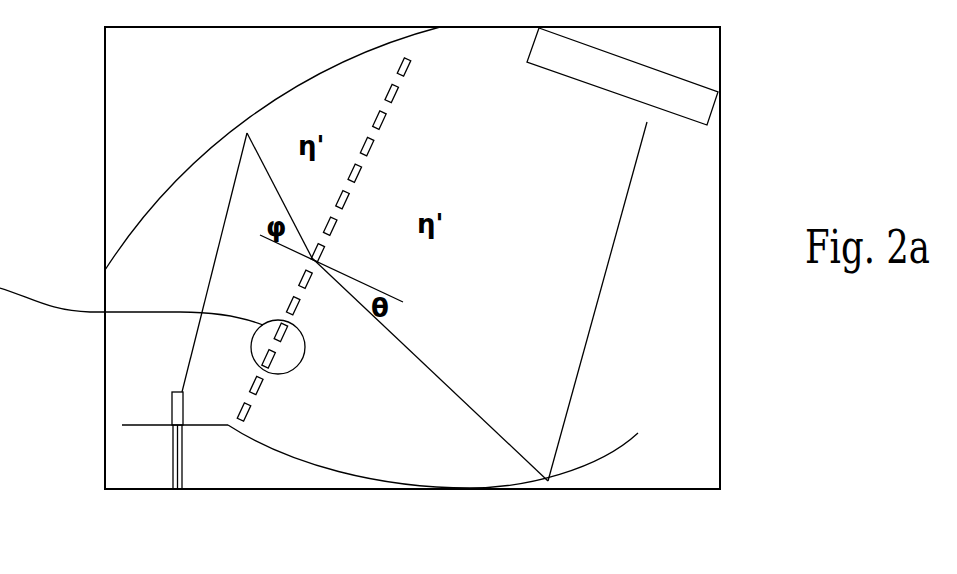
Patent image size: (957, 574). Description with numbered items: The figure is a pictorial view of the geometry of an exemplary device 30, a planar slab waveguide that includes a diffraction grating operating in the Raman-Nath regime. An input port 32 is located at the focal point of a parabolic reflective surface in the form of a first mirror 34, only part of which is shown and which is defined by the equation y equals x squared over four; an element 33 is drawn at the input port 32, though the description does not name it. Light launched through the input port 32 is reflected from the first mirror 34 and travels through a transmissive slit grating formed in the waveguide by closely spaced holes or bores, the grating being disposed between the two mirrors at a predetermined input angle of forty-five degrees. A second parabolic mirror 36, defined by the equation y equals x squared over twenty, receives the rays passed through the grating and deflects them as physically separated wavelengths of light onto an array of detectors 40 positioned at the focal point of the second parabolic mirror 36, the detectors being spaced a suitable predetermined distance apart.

The device 30 is at (103, 101).
The input port 32 is at (172, 438).
The fiber ferrule 33 is at (178, 392).
The first mirror 34 is at (245, 116).
The second parabolic mirror 36 is at (460, 487).
The array of detectors 40 is at (620, 96).